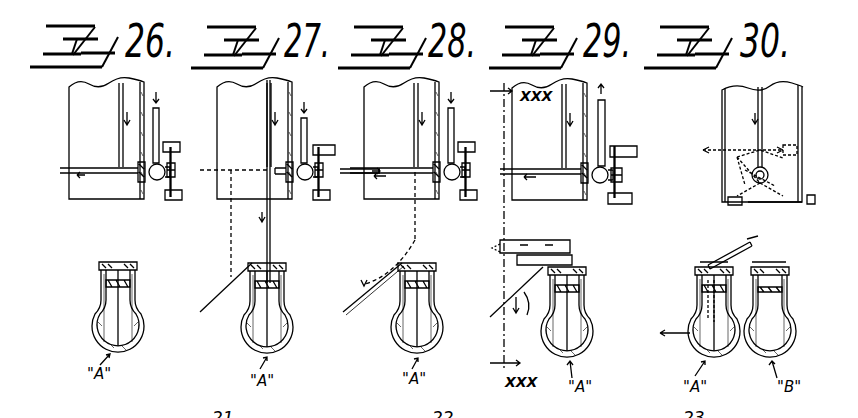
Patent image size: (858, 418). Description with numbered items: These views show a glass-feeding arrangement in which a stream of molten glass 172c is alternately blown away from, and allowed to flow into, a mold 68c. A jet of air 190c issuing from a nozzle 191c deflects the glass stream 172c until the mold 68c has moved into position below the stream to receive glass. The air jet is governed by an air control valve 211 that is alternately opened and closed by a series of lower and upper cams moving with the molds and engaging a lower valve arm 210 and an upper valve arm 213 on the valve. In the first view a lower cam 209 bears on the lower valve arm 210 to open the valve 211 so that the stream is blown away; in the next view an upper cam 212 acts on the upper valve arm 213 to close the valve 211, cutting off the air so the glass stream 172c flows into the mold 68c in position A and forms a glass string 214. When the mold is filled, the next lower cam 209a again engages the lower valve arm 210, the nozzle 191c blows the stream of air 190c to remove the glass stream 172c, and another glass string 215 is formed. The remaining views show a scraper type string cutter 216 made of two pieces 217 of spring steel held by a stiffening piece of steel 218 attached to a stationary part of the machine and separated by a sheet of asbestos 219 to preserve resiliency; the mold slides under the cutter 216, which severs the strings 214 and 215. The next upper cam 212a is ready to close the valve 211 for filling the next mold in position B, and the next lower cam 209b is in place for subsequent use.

In FIG. 26, the glass stream 172c is at (118, 124).
In FIG. 27, the glass stream 172c is at (266, 118).
In FIG. 28, the glass stream 172c is at (414, 116).
In FIG. 29, the glass stream 172c is at (565, 126).
In FIG. 30, the glass stream 172c is at (723, 100).
In FIG. 26, the jet of air 190c is at (128, 173).
In FIG. 28, the jet of air 190c is at (413, 173).
In FIG. 29, the jet of air 190c is at (562, 174).
In FIG. 26, the nozzle 191c is at (130, 176).
In FIG. 27, the nozzle 191c is at (283, 178).
In FIG. 28, the nozzle 191c is at (433, 177).
In FIG. 29, the nozzle 191c is at (578, 181).
In FIG. 26, the air control valve 211 is at (158, 181).
In FIG. 27, the air control valve 211 is at (300, 170).
In FIG. 28, the air control valve 211 is at (445, 172).
In FIG. 29, the air control valve 211 is at (594, 173).
In FIG. 30, the air control valve 211 is at (768, 175).
In FIG. 26, the lower valve arm 210 is at (172, 183).
In FIG. 27, the lower valve arm 210 is at (322, 186).
In FIG. 28, the lower valve arm 210 is at (470, 186).
In FIG. 29, the lower valve arm 210 is at (620, 187).
In FIG. 30, the lower valve arm 210 is at (740, 179).
In FIG. 26, the upper cam 212 is at (180, 147).
In FIG. 27, the upper cam 212 is at (325, 145).
In FIG. 28, the upper cam 212 is at (475, 146).
In FIG. 29, the next upper cam 212a is at (635, 148).
In FIG. 30, the next upper cam 212a is at (788, 145).
In FIG. 26, the upper valve arm 213 is at (176, 168).
In FIG. 27, the upper valve arm 213 is at (325, 170).
In FIG. 28, the upper valve arm 213 is at (474, 168).
In FIG. 29, the upper valve arm 213 is at (622, 171).
In FIG. 30, the upper valve arm 213 is at (735, 150).
In FIG. 26, the lower cam 209 is at (183, 198).
In FIG. 27, the next lower cam 209a is at (322, 203).
In FIG. 28, the next lower cam 209a is at (477, 206).
In FIG. 29, the next lower cam 209a is at (628, 205).
In FIG. 30, the next lower cam 209a is at (735, 206).
In FIG. 30, the next lower cam 209b is at (810, 204).
In FIG. 27, the glass string 214 is at (222, 316).
In FIG. 28, the glass string 214 is at (370, 317).
In FIG. 29, the glass string 214 is at (522, 314).
In FIG. 30, the glass string 214 is at (700, 303).
In FIG. 28, the glass string 215 is at (362, 292).
In FIG. 29, the glass string 215 is at (512, 300).
In FIG. 30, the glass string 215 is at (700, 322).
In FIG. 29, the scraper type string cutter 216 is at (568, 242).
In FIG. 30, the scraper type string cutter 216 is at (722, 250).
In FIG. 29, the pieces of spring steel 217 is at (572, 260).
In FIG. 30, the pieces of spring steel 217 is at (712, 262).
In FIG. 29, the stiffening piece of steel 218 is at (497, 249).
In FIG. 30, the stiffening piece of steel 218 is at (762, 204).
In FIG. 30, the sheet of asbestos 219 is at (752, 240).
In FIG. 26, the mold 68c is at (96, 332).
In FIG. 27, the mold 68c is at (282, 346).
In FIG. 28, the mold 68c is at (435, 346).
In FIG. 29, the mold 68c is at (588, 347).
In FIG. 30, the mold 68c is at (753, 356).